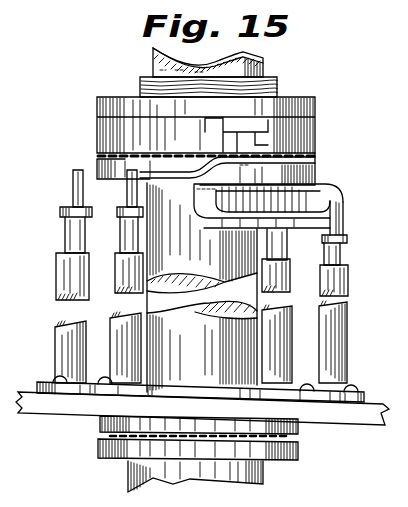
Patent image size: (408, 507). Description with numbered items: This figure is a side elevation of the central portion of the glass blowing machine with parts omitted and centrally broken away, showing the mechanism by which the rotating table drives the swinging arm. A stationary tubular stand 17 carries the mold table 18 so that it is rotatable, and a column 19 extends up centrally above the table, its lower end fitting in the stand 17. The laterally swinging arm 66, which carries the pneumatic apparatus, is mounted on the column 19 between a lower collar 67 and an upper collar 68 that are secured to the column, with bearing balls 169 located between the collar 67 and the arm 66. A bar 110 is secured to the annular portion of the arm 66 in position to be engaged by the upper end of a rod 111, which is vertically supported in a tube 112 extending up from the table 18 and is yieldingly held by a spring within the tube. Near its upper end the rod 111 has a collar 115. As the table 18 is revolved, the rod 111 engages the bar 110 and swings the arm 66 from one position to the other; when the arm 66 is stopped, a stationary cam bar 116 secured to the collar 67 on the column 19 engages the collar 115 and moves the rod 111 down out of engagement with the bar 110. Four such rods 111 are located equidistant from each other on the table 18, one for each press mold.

The stationary tubular stand 17 is at (380, 78).
The mold table 18 is at (349, 420).
The column 19 is at (202, 287).
The laterally swinging arm 66 is at (314, 144).
The collar 67 is at (314, 178).
The collar 68 is at (313, 110).
The bar 110 is at (169, 176).
The rod 111 is at (125, 192).
The tube 112 is at (120, 352).
The collar 115 is at (118, 213).
The cam bar 116 is at (220, 218).
The bearing balls 169 is at (97, 152).